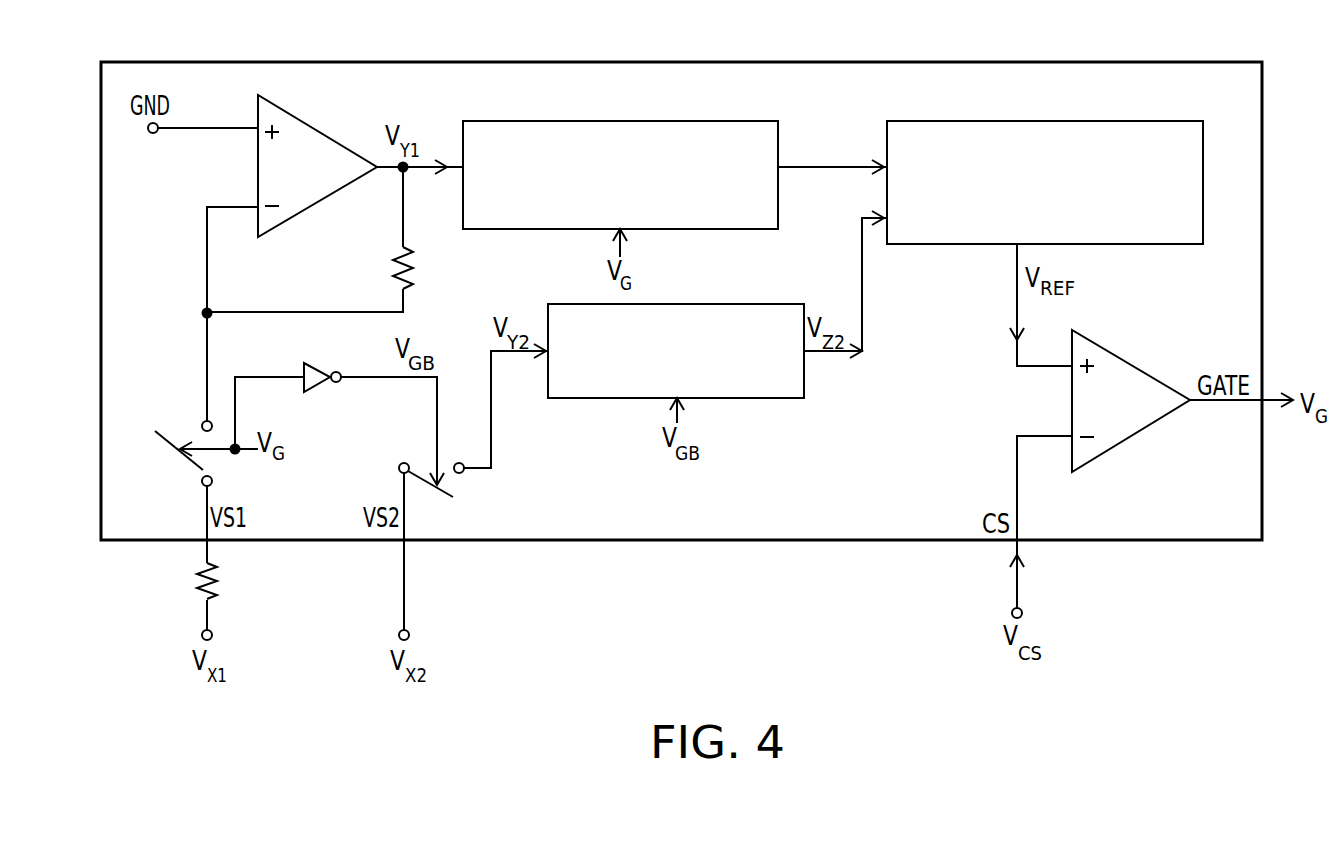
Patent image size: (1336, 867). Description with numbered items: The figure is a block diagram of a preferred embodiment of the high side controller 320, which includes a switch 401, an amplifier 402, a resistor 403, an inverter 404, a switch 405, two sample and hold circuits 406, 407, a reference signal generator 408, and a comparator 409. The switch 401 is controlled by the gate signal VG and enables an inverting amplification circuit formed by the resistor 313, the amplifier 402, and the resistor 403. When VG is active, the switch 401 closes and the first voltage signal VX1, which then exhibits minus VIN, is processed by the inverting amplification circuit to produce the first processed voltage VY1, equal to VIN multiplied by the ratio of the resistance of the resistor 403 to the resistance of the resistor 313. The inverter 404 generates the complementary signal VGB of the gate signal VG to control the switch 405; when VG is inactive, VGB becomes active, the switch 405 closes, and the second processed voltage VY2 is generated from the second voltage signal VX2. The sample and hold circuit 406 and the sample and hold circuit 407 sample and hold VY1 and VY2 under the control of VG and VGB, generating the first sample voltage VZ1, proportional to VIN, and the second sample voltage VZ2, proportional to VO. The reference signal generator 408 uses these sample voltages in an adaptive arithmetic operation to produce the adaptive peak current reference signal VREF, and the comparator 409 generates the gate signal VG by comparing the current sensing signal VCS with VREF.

The high side controller 320 is at (677, 62).
The switch 401 is at (200, 440).
The amplifier 402 is at (308, 122).
The resistor 403 is at (412, 272).
The inverter 404 is at (313, 387).
The switch 405 is at (455, 486).
The sample and hold circuit 406 is at (567, 121).
The sample and hold circuit 407 is at (730, 398).
The reference signal generator 408 is at (1068, 121).
The comparator 409 is at (1128, 360).
The resistor 313 is at (217, 588).